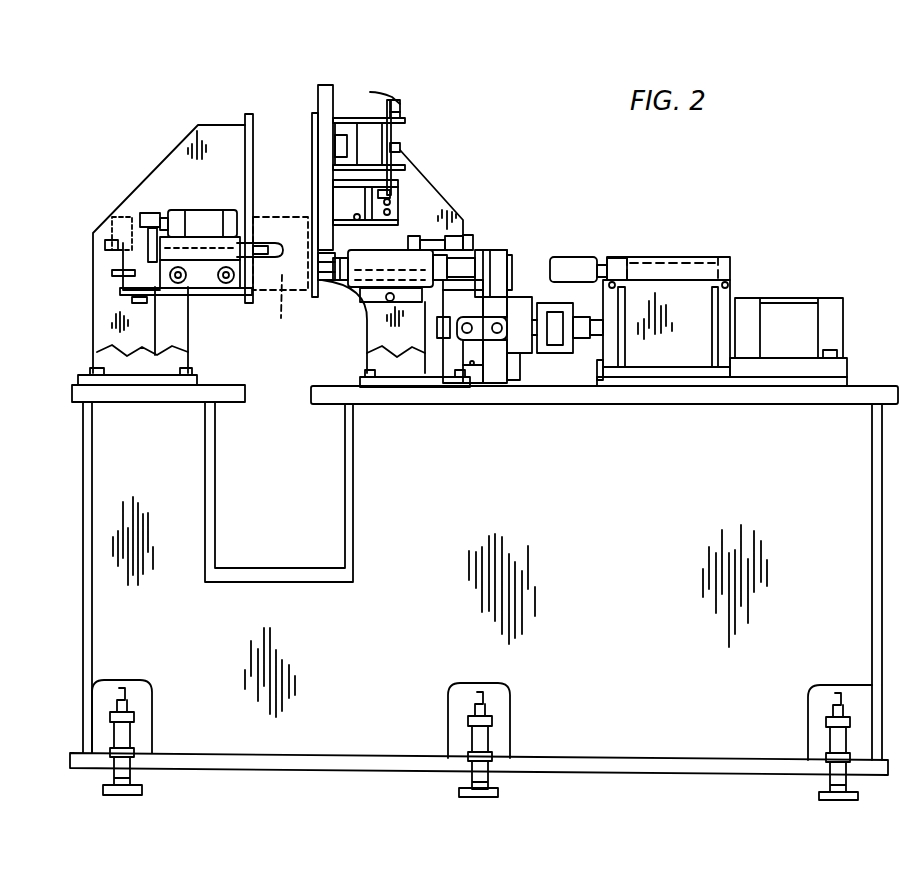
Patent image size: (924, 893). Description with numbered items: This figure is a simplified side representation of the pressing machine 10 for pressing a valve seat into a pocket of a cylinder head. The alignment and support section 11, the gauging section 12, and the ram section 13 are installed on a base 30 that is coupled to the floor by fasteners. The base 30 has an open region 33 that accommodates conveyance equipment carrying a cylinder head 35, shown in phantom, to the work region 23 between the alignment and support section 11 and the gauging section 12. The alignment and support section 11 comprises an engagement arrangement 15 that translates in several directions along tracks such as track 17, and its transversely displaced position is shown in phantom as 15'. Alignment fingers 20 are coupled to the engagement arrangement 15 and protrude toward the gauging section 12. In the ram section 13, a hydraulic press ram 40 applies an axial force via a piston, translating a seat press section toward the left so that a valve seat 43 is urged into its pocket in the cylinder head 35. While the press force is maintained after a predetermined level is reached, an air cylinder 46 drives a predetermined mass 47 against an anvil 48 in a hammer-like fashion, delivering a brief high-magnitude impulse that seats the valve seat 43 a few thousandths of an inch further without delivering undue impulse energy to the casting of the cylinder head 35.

The pressing machine 10 is at (620, 510).
The alignment and support section 11 is at (178, 165).
The gauging section 12 is at (345, 97).
The ram section 13 is at (651, 237).
The engagement arrangement 15 is at (202, 206).
The engagement arrangement (phantom transversely displaced position) 15' is at (103, 206).
The track 17 is at (226, 280).
The alignment fingers 20 is at (270, 243).
The work region 23 is at (293, 112).
The base 30 is at (447, 393).
The open region 33 is at (263, 377).
The cylinder head 35 is at (280, 280).
The hydraulic press ram 40 is at (672, 352).
The valve seat 43 is at (322, 283).
The air cylinder 46 is at (695, 262).
The mass 47 is at (570, 262).
The anvil 48 is at (512, 268).